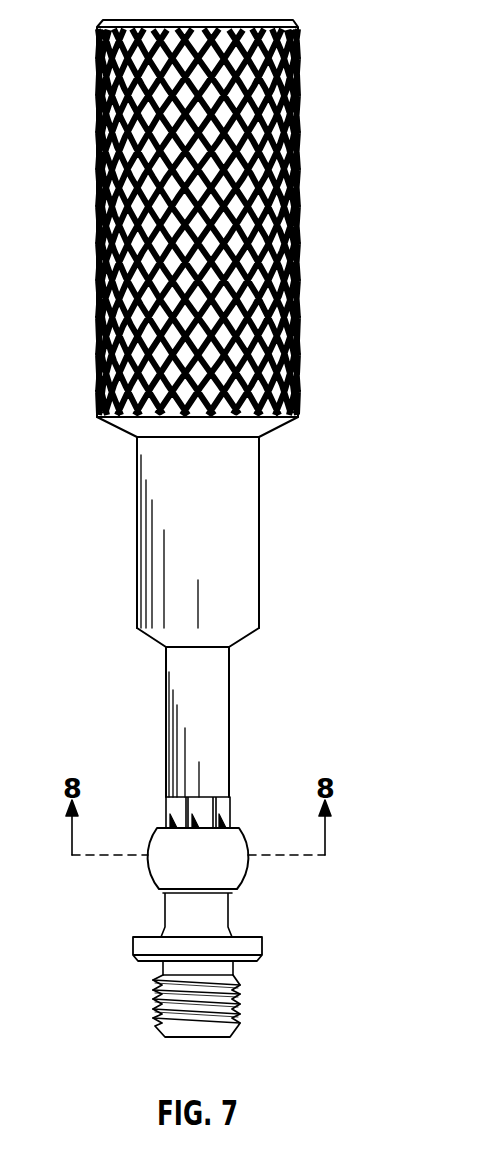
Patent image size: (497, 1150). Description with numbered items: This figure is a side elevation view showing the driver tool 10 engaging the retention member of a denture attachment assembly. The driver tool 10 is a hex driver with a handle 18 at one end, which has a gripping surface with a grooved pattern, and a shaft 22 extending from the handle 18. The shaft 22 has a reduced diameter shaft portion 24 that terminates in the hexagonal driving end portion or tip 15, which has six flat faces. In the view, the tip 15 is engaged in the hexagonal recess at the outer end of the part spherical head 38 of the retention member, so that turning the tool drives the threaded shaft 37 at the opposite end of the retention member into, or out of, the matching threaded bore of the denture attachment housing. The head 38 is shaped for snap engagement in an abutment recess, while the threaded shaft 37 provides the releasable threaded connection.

The driver tool 10 is at (241, 528).
The handle 18 is at (287, 253).
The shaft 22 is at (245, 532).
The reduced diameter shaft portion 24 is at (216, 698).
The driving end portion or tip 15 is at (235, 807).
The part spherical head 38 is at (243, 873).
The threaded shaft 37 is at (240, 998).